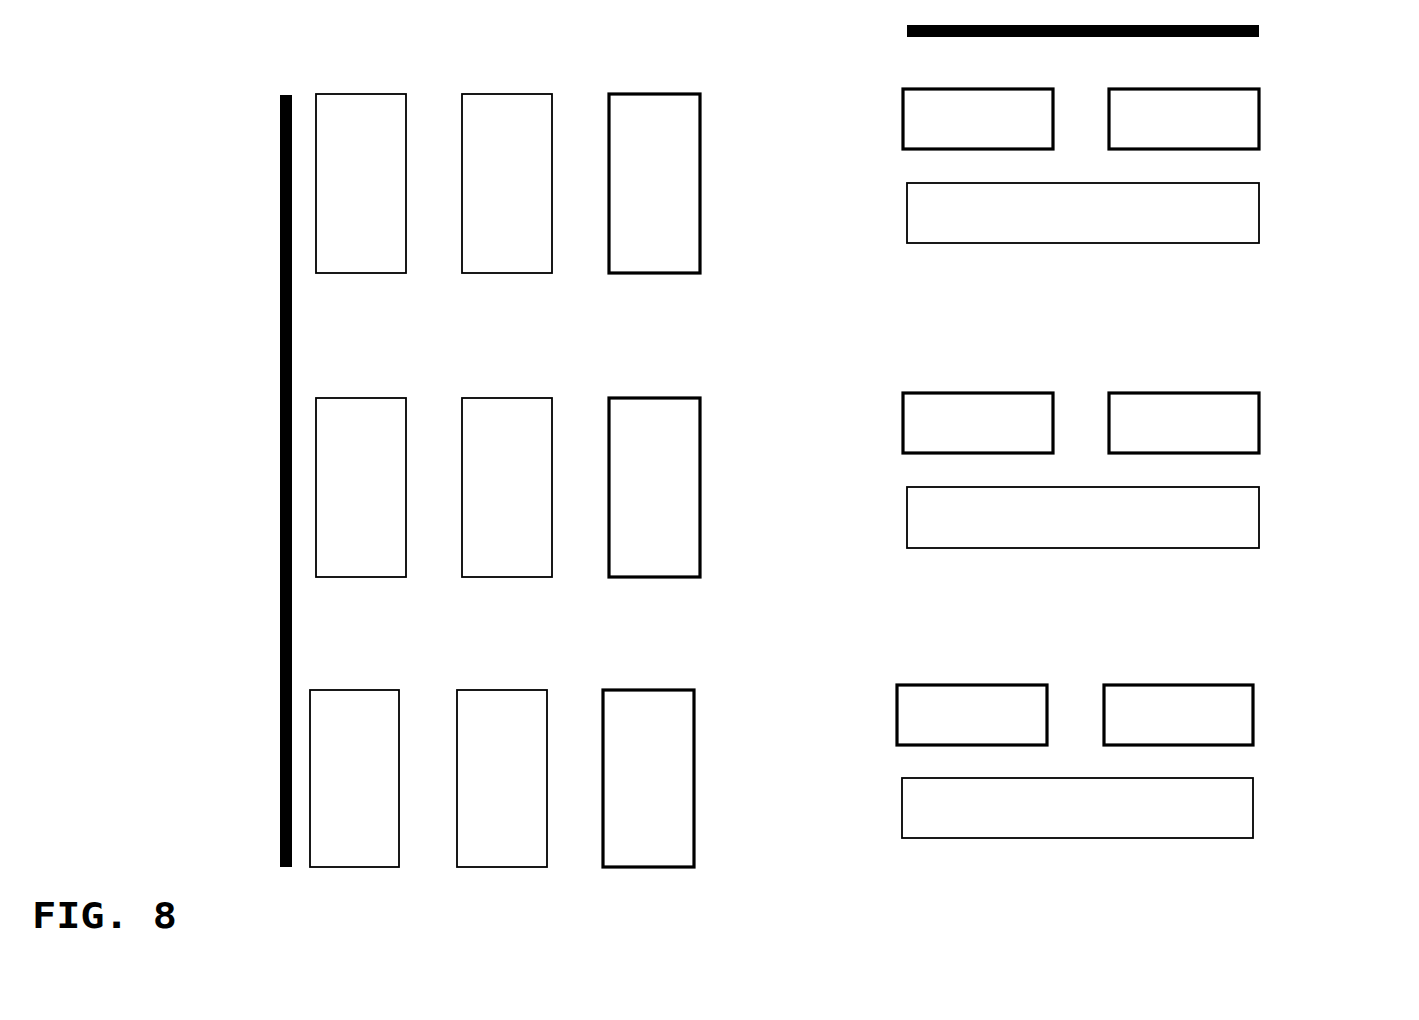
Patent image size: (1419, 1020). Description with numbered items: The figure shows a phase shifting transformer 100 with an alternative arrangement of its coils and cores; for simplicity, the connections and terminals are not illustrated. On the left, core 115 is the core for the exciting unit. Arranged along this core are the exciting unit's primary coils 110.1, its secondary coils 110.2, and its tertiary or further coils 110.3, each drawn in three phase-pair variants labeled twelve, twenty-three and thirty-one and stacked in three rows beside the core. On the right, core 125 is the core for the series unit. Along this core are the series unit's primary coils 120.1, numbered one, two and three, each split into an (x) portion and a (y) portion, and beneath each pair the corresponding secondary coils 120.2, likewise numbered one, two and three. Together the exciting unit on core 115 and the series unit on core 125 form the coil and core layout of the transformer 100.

The phase shifting transformer 100 is at (258, 918).
The core 115 is at (326, 462).
The core 125 is at (1156, 41).
The primary coils 110.1 is at (358, 480).
The secondary coils 110.2 is at (504, 480).
The tertiary coils 110.3 is at (651, 480).
The primary coils 120.1 is at (1078, 417).
The secondary coils 120.2 is at (1080, 510).